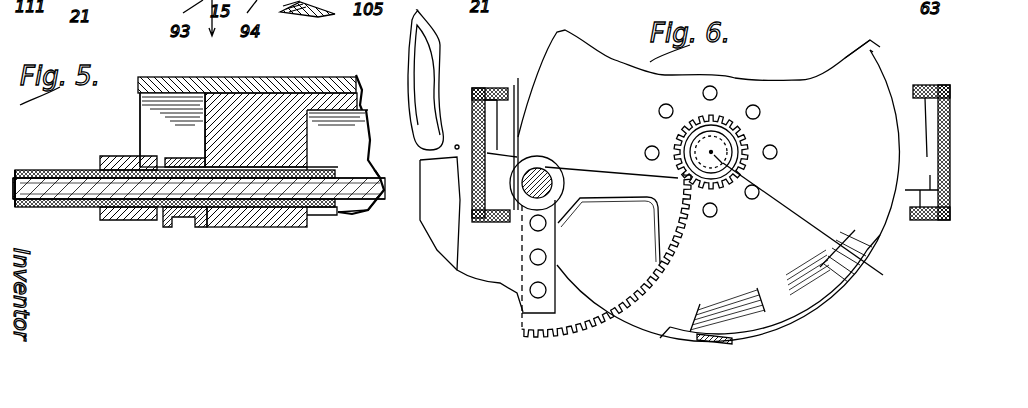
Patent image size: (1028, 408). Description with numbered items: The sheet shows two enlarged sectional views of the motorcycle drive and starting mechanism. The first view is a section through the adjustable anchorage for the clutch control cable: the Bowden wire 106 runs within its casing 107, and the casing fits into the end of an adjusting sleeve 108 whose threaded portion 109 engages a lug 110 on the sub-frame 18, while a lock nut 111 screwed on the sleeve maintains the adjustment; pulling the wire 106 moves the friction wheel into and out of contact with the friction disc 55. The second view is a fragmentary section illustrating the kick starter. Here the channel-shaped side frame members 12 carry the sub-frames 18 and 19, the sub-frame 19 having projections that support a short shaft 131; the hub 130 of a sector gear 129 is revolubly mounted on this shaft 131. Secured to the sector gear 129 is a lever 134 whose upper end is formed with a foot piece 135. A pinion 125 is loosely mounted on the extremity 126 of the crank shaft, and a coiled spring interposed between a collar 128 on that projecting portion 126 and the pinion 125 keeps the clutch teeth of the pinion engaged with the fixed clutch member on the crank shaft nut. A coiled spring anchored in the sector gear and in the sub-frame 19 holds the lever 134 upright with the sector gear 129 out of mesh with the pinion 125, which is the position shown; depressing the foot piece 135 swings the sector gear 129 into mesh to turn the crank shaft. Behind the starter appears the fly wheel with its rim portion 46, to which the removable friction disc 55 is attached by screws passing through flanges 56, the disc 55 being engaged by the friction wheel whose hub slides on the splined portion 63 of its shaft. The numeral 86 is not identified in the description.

In FIG. 5, the side frame members 12 is at (300, 78).
In FIG. 6, the side frame members 12 is at (477, 226).
In FIG. 5, the sub-frame 18 is at (359, 92).
In FIG. 6, the sub-frame 18 is at (933, 140).
In FIG. 6, the sub-frame 19 is at (518, 80).
In FIG. 6, the rim portion of the fly wheel 46 is at (870, 247).
In FIG. 6, the friction disc 55 is at (872, 44).
In FIG. 6, the flanges 56 is at (855, 292).
In FIG. 6, the splined portion 63 is at (905, 26).
In FIG. 6, the disc plate 86 is at (708, 171).
In FIG. 5, the Bowden wire 106 is at (38, 187).
In FIG. 5, the casing of the Bowden wire 107 is at (18, 186).
In FIG. 5, the adjusting sleeve 108 is at (127, 222).
In FIG. 5, the threaded portion 109 is at (340, 214).
In FIG. 5, the lug 110 is at (265, 228).
In FIG. 5, the lock nut 111 is at (183, 212).
In FIG. 6, the pinion 125 is at (712, 117).
In FIG. 6, the extremity of the crank shaft 126 is at (819, 229).
In FIG. 6, the collar 128 is at (733, 123).
In FIG. 6, the sector gear 129 is at (535, 333).
In FIG. 6, the hub 130 is at (547, 157).
In FIG. 6, the short shaft 131 is at (552, 172).
In FIG. 6, the lever 134 is at (470, 278).
In FIG. 6, the foot piece 135 is at (440, 43).